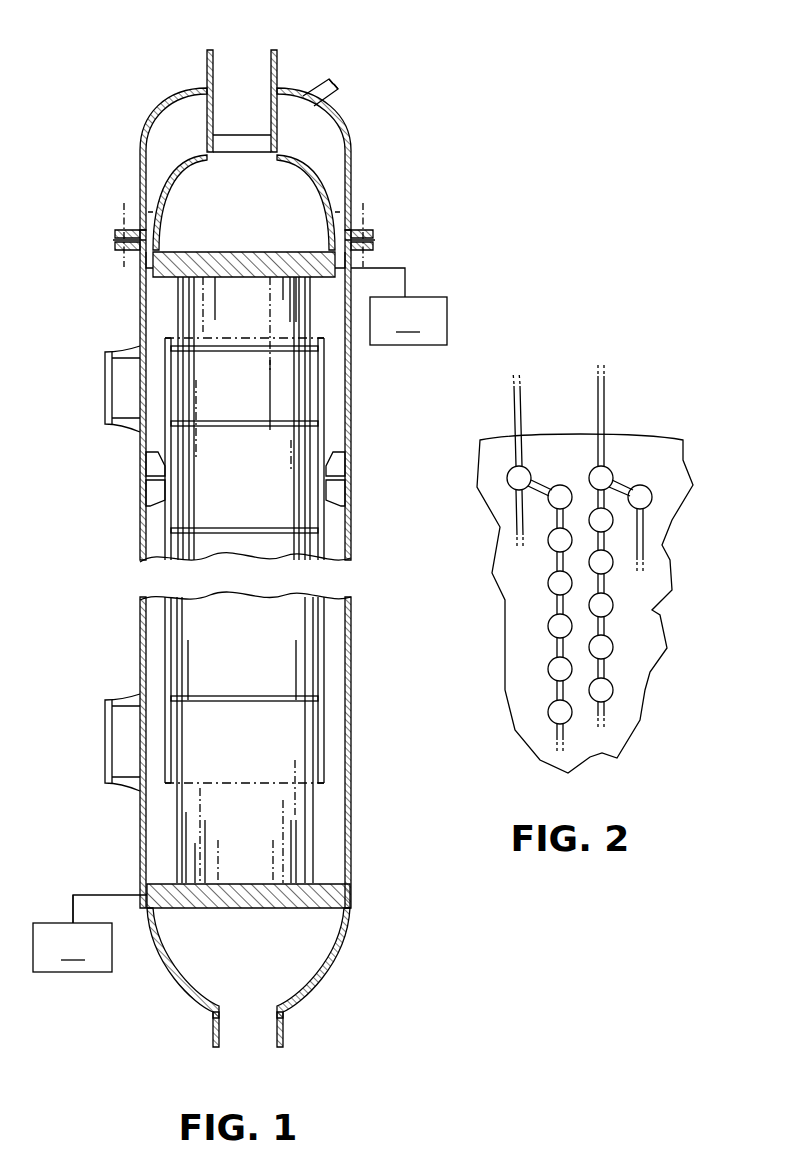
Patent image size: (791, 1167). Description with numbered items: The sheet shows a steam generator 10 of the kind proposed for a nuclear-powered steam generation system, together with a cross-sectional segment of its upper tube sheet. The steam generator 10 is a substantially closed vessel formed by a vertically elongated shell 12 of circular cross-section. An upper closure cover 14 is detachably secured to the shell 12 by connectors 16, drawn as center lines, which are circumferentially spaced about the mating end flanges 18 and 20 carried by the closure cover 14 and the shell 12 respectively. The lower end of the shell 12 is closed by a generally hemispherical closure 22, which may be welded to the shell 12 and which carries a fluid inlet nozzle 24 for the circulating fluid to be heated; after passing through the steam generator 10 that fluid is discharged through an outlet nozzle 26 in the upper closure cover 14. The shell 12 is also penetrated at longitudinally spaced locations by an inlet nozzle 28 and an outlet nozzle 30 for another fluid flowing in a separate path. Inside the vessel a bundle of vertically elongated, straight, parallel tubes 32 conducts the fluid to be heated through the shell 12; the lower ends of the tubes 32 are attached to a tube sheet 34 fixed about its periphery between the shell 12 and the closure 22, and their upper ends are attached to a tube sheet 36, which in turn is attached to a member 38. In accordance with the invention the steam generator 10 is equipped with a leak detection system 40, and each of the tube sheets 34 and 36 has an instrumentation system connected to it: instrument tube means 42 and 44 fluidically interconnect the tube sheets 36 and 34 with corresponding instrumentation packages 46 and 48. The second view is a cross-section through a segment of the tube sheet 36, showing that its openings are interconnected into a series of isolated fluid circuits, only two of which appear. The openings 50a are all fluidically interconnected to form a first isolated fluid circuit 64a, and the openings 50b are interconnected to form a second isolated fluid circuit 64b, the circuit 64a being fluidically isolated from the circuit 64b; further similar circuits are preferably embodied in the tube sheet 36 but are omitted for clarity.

In FIG. 1, the steam generator 10 is at (358, 656).
In FIG. 1, the shell 12 is at (352, 437).
In FIG. 1, the upper closure cover 14 is at (342, 144).
In FIG. 1, the connectors 16 is at (121, 220).
In FIG. 1, the end flange 18 is at (118, 233).
In FIG. 1, the end flange 20 is at (118, 248).
In FIG. 1, the hemispherical closure 22 is at (328, 972).
In FIG. 1, the fluid inlet nozzle 24 is at (216, 1040).
In FIG. 1, the outlet nozzle 26 is at (270, 62).
In FIG. 1, the inlet nozzle 28 is at (105, 397).
In FIG. 1, the outlet nozzle 30 is at (105, 752).
In FIG. 1, the tubes 32 is at (182, 716).
In FIG. 1, the tube sheet 34 is at (247, 910).
In FIG. 1, the tube sheet 36 is at (262, 250).
In FIG. 2, the tube sheet 36 is at (665, 623).
In FIG. 1, the member 38 is at (181, 187).
In FIG. 1, the leak detection system 40 is at (66, 902).
In FIG. 1, the instrument tube means 42 is at (406, 276).
In FIG. 1, the instrument tube means 44 is at (84, 894).
In FIG. 1, the instrumentation package 46 is at (408, 321).
In FIG. 1, the instrumentation package 48 is at (72, 947).
In FIG. 2, the openings 50a is at (637, 485).
In FIG. 2, the openings 50b is at (530, 466).
In FIG. 2, the first isolated fluid circuit 64a is at (608, 413).
In FIG. 2, the second isolated fluid circuit 64b is at (511, 418).